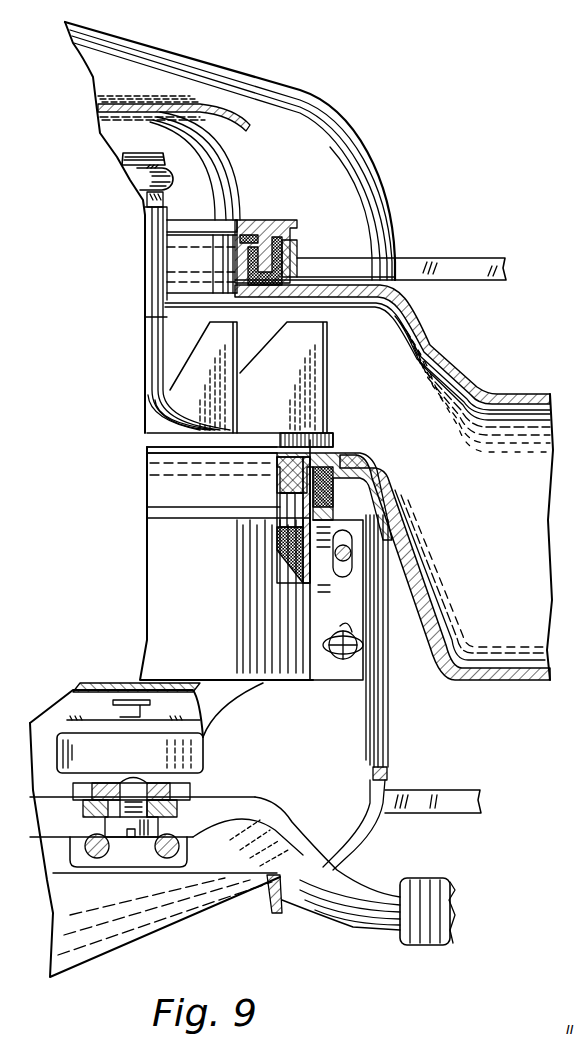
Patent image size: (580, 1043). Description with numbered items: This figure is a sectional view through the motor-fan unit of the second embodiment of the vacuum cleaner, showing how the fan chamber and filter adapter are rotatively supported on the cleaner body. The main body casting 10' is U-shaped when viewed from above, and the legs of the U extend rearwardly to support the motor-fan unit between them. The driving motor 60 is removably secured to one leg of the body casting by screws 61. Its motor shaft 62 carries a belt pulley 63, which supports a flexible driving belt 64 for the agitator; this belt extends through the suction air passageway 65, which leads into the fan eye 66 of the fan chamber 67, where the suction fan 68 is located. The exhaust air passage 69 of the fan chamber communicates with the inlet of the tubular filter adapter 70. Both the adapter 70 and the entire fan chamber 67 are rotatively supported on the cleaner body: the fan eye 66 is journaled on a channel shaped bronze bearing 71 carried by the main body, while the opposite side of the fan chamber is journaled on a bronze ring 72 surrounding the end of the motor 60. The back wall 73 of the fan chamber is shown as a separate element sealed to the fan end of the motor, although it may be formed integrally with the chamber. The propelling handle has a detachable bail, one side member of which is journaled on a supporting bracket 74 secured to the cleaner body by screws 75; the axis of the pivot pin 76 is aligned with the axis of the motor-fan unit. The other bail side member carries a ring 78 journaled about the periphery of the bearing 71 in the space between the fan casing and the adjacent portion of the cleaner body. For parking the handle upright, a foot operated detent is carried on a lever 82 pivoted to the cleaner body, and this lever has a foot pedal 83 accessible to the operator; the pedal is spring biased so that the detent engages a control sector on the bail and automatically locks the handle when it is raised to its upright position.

The main body casting 10' is at (156, 830).
The driving motor 60 is at (193, 566).
The screws 61 is at (343, 634).
The motor shaft 62 is at (150, 220).
The belt pulley 63 is at (150, 152).
The flexible driving belt 64 is at (143, 175).
The suction air passageway 65 is at (103, 133).
The fan eye 66 is at (202, 256).
The fan chamber 67 is at (357, 349).
The suction fan 68 is at (240, 387).
The exhaust air passage 69 is at (472, 384).
The tubular filter adapter 70 is at (446, 537).
The channel shaped bronze bearing 71 is at (293, 232).
The bronze ring 72 is at (333, 487).
The back wall 73 is at (275, 457).
The supporting bracket 74 is at (187, 862).
The screws 75 is at (160, 840).
The pivot pin 76 is at (120, 822).
The ring 78 is at (296, 258).
The lever 82 is at (296, 848).
The foot pedal 83 is at (446, 944).